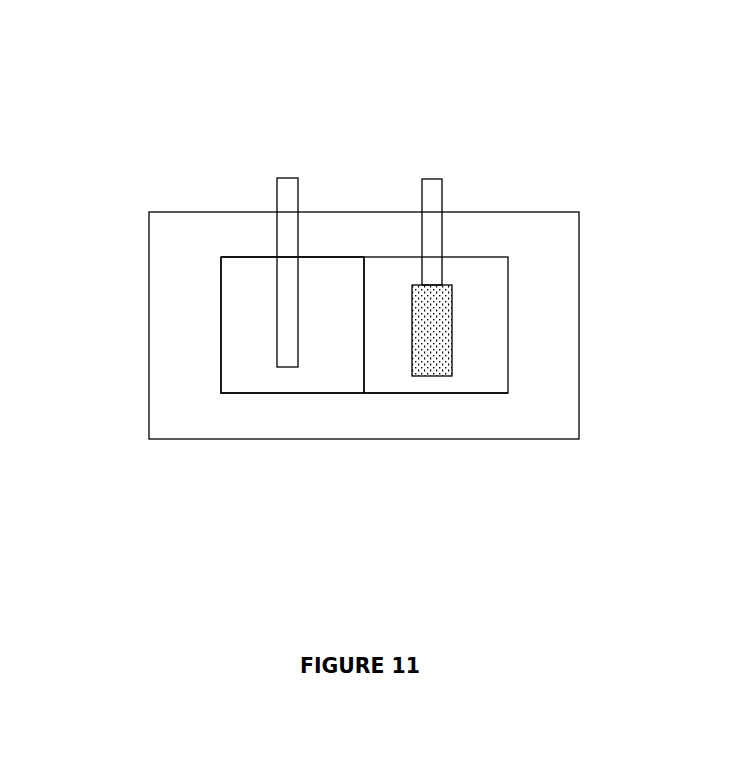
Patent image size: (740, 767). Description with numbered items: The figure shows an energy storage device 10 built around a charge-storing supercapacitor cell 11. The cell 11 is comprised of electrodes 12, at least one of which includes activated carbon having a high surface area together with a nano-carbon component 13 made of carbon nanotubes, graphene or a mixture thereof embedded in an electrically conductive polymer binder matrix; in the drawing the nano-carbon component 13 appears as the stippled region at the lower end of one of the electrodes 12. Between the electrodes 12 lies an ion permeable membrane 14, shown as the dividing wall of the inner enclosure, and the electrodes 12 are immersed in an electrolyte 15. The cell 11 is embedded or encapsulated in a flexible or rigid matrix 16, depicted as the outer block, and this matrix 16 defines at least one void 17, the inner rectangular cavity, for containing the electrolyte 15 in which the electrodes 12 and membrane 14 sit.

The energy storage device 10 is at (97, 113).
The supercapacitor cell 11 is at (361, 175).
The electrodes 12 is at (288, 178).
The nano-carbon component 13 is at (452, 330).
The ion permeable membrane 14 is at (365, 367).
The electrolyte 15 is at (243, 297).
The matrix 16 is at (221, 439).
The void 17 is at (222, 324).